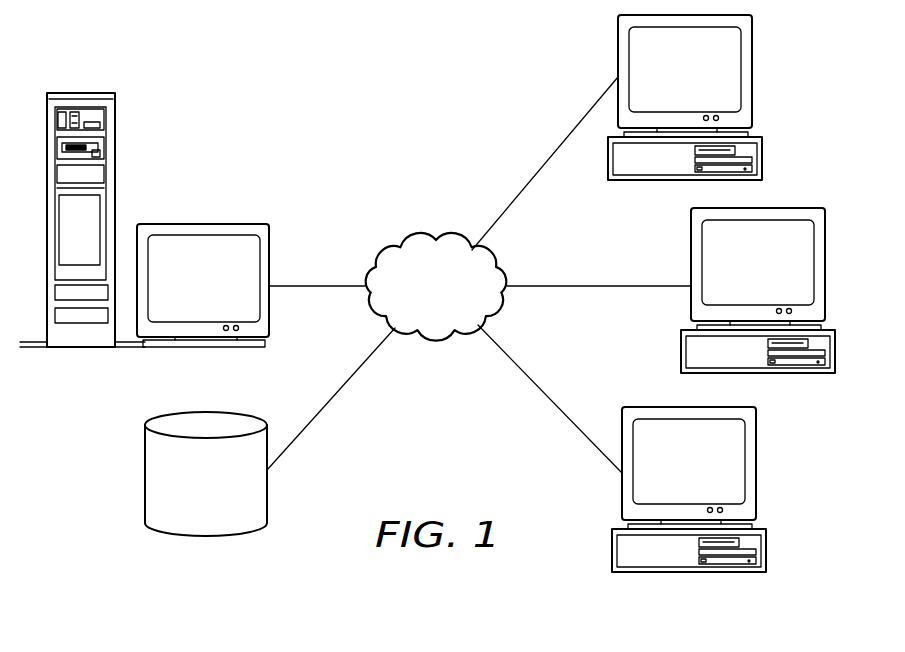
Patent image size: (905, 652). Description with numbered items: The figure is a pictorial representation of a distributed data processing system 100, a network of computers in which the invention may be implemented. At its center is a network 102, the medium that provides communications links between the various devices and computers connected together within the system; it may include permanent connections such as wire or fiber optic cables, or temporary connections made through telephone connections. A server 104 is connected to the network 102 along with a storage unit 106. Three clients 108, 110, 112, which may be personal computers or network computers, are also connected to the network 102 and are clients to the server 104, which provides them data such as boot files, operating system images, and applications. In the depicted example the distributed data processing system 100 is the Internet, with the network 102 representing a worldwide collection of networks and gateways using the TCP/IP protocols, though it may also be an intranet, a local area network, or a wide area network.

The distributed data processing system 100 is at (314, 100).
The network 102 is at (455, 298).
The server 104 is at (186, 287).
The storage unit 106 is at (187, 496).
The client 108 is at (667, 81).
The client 110 is at (758, 290).
The client 112 is at (689, 489).